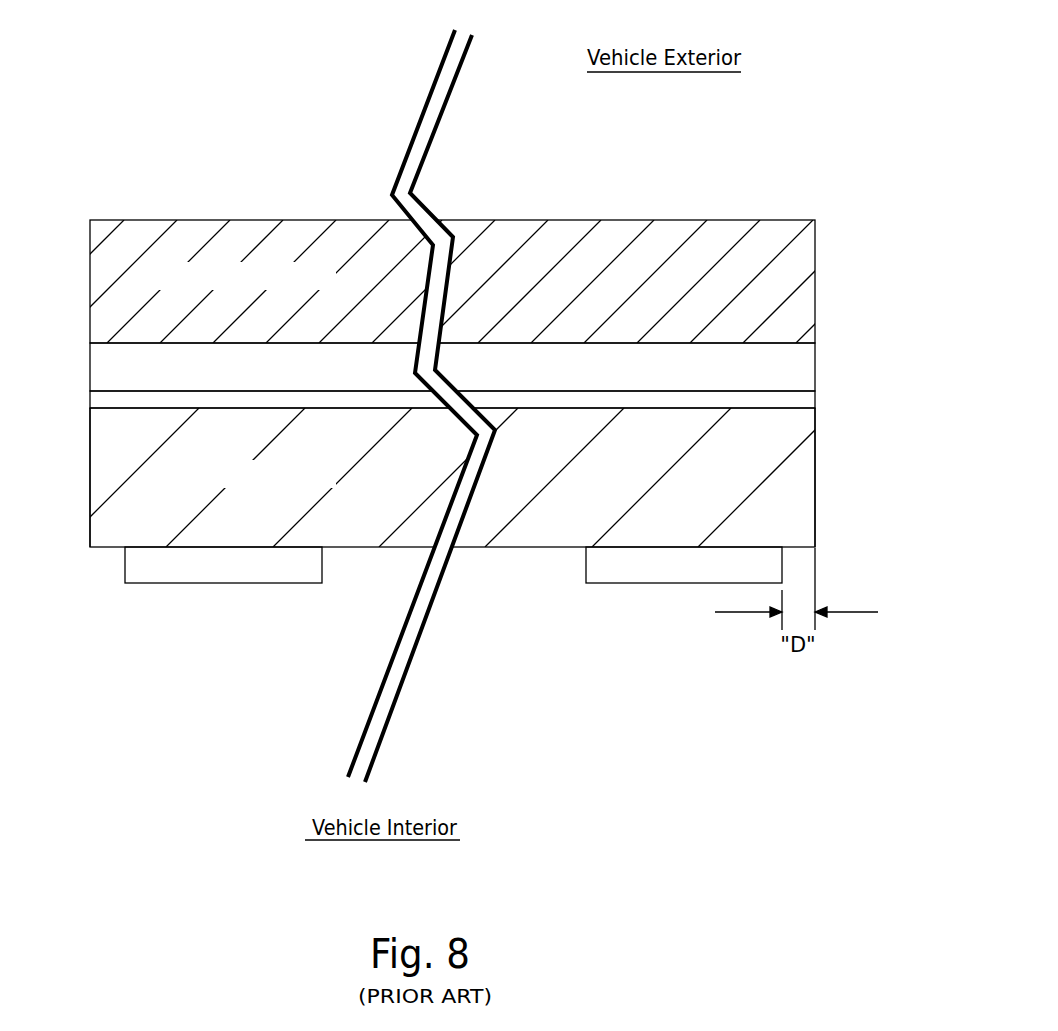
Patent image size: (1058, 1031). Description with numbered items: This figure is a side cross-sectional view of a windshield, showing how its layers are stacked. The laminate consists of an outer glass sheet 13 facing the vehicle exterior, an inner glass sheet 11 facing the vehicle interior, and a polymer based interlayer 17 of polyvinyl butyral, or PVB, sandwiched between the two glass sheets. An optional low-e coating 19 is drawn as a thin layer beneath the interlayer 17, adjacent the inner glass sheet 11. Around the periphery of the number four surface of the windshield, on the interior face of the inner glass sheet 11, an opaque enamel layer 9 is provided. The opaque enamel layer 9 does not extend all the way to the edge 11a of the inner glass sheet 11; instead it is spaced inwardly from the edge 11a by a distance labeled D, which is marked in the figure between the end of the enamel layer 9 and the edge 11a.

The outer glass sheet 13 is at (612, 233).
The PVB interlayer 17 is at (807, 363).
The low-e coating 19 is at (805, 399).
The inner glass sheet 11 is at (547, 528).
The edge of inner glass sheet 11a is at (815, 513).
The opaque enamel layer 9 is at (303, 571).